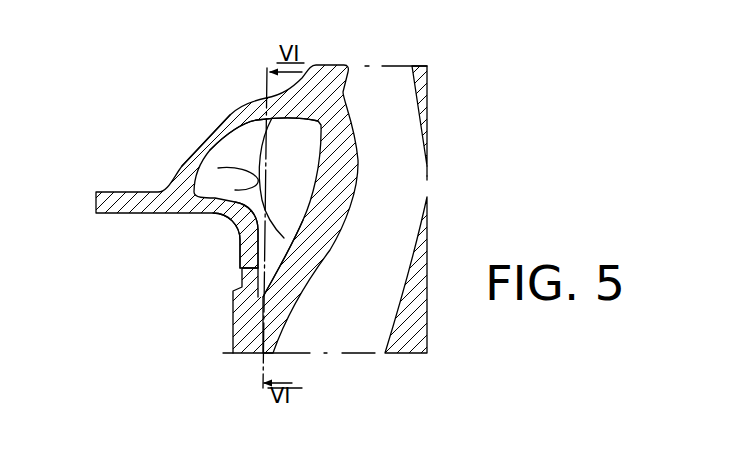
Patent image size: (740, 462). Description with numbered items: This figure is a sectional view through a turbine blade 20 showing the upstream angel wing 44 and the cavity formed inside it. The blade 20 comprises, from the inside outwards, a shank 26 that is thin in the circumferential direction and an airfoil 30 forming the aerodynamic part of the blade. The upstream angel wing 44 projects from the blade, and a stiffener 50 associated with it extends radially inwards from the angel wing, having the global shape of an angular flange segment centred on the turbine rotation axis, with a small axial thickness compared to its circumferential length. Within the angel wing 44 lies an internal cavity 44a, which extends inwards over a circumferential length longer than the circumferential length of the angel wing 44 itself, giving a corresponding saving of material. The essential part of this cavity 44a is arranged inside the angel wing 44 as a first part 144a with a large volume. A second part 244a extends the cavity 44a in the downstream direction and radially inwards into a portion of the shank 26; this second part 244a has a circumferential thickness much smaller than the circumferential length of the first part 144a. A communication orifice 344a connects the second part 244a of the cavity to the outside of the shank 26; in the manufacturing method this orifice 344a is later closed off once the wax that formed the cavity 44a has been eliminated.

The blade 20 is at (430, 103).
The shank 26 is at (372, 369).
The airfoil 30 is at (393, 98).
The upstream angel wing 44 is at (163, 175).
The internal cavity 44a is at (250, 140).
The first part of the cavity 144a is at (208, 137).
The second part of the cavity 244a is at (283, 257).
The communication orifice 344a is at (250, 243).
The stiffener 50 is at (243, 318).